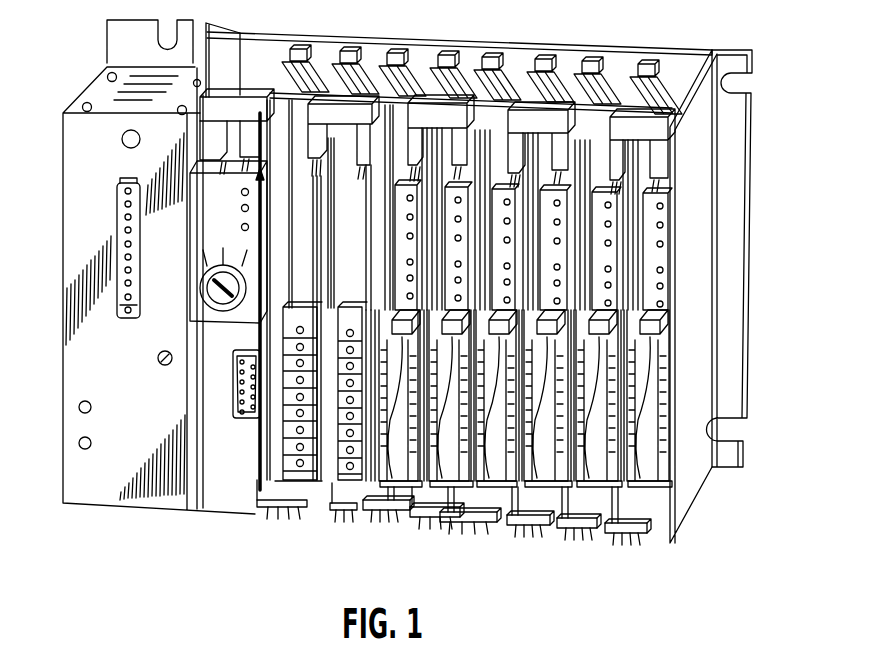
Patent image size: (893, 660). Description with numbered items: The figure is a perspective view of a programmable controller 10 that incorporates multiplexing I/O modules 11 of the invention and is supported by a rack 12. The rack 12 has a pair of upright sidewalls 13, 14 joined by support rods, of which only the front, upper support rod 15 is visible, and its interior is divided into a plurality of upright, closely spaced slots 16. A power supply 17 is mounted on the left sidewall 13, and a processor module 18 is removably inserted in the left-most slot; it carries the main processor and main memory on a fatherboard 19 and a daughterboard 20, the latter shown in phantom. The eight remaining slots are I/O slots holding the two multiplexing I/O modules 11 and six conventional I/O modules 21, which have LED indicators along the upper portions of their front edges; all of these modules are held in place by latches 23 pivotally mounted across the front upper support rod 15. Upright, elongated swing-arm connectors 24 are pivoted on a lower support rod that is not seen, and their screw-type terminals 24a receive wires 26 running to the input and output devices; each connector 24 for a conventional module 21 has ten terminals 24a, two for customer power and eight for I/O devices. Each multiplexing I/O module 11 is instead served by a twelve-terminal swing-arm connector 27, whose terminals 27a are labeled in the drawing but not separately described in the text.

The programmable controller 10 is at (662, 32).
The multiplexing I/O module 11 is at (344, 229).
The rack 12 is at (754, 210).
The left sidewall 13 is at (208, 30).
The right sidewall 14 is at (698, 288).
The front upper support rod 15 is at (600, 135).
The slots 16 is at (429, 78).
The power supply 17 is at (130, 391).
The processor module 18 is at (232, 443).
The fatherboard 19 is at (317, 47).
The daughterboard 20 is at (299, 36).
The conventional I/O modules 21 is at (572, 81).
The latches 23 is at (318, 110).
The swing-arm connectors 24 is at (512, 448).
The screw-type terminals 24a is at (543, 429).
The wires 26 is at (640, 533).
The twelve-terminal swing-arm connector 27 is at (323, 452).
The terminal block 27a is at (352, 462).